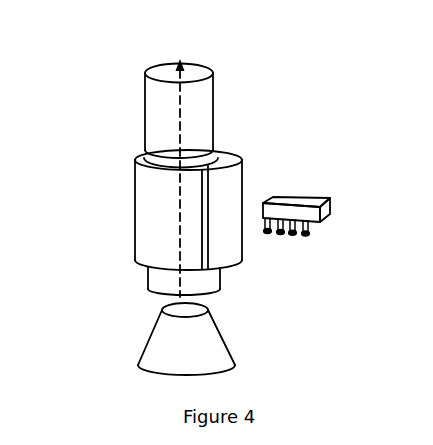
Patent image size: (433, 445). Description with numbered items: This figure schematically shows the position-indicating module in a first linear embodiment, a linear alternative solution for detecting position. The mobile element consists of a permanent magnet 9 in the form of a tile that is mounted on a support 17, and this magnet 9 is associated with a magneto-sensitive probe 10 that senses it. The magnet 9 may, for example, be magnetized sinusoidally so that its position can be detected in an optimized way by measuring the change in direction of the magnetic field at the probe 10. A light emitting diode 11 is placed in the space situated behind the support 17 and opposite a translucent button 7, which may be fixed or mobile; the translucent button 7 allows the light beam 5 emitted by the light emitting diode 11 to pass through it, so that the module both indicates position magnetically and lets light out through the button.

The light beam 5 is at (178, 103).
The translucent button 7 is at (203, 110).
The permanent magnet 9 is at (227, 170).
The magneto-sensitive probe 10 is at (305, 187).
The light emitting diode 11 is at (193, 342).
The support 17 is at (137, 217).